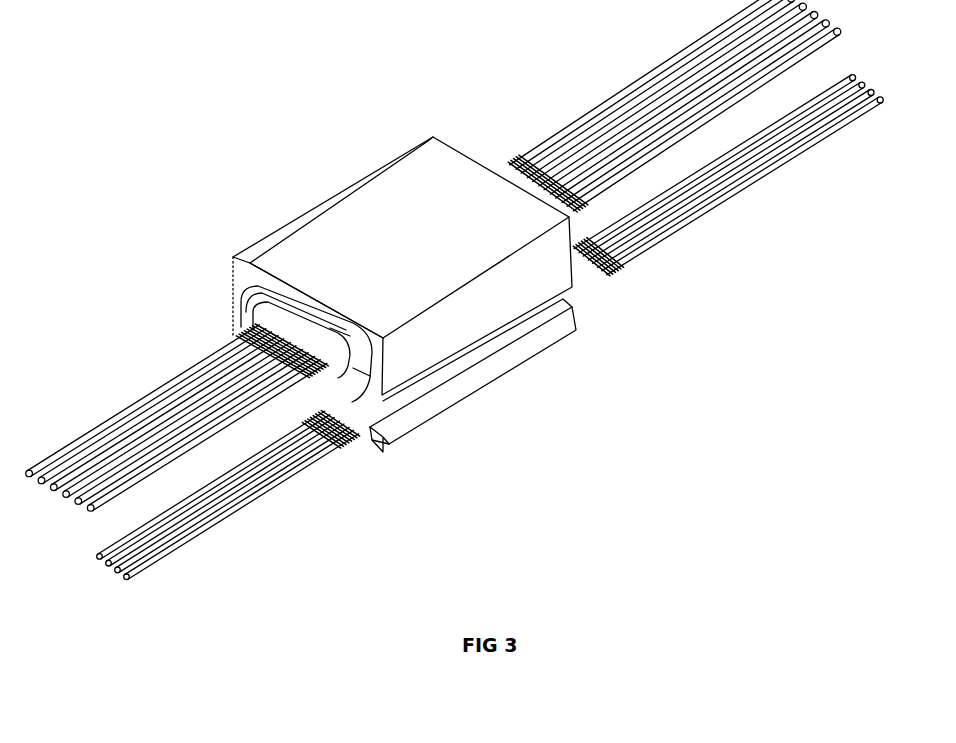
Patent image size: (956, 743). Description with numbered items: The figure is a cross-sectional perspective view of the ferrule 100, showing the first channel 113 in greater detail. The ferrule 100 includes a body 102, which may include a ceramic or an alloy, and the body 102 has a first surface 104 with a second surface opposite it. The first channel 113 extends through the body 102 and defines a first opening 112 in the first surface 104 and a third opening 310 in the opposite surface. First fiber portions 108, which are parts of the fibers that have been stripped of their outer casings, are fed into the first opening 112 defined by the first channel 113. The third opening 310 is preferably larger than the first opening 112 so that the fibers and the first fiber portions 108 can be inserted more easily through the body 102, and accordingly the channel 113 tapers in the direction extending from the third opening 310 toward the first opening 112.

The ferrule 100 is at (320, 150).
The body 102 is at (412, 197).
The first surface 104 is at (243, 278).
The first fiber portions 108 is at (342, 471).
The first opening 112 is at (380, 443).
The first channel 113 is at (447, 383).
The third opening 310 is at (563, 303).